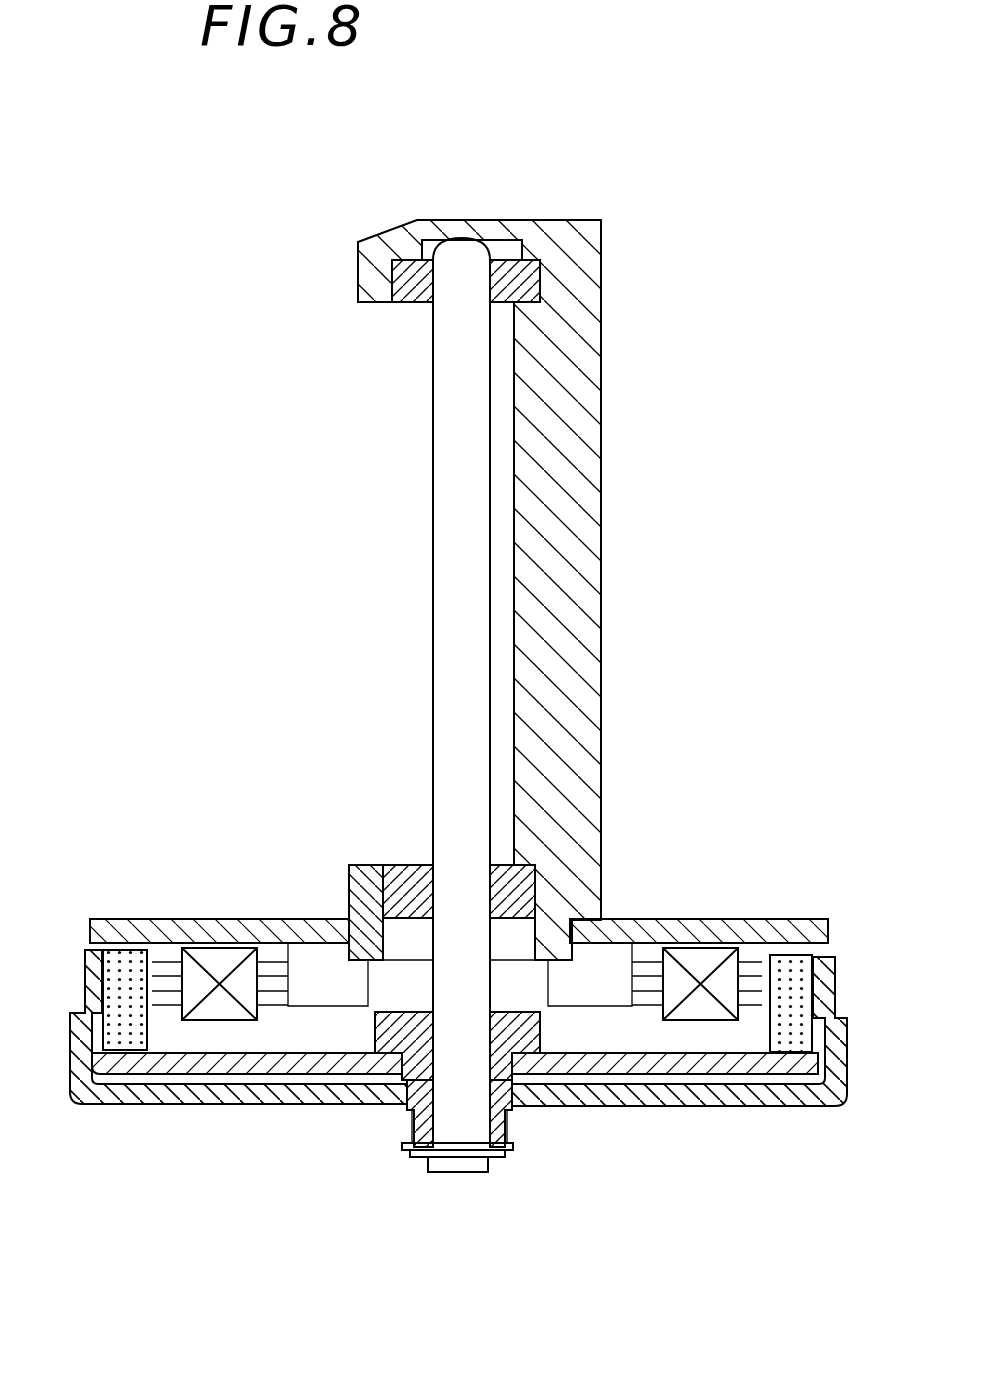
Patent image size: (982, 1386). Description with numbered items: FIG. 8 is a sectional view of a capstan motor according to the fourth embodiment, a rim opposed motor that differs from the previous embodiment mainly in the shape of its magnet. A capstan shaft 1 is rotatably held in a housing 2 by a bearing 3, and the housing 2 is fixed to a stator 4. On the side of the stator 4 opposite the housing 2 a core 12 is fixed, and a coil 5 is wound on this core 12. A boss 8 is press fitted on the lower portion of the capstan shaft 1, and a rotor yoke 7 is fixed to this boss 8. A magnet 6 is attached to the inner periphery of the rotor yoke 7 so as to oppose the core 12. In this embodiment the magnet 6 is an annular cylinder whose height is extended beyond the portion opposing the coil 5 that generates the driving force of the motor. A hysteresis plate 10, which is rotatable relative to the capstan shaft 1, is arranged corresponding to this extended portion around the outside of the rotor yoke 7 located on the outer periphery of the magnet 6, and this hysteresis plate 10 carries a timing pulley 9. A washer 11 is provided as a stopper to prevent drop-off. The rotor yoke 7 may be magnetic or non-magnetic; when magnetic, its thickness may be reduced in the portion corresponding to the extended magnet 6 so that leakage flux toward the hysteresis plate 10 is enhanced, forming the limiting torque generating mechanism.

The capstan shaft 1 is at (447, 477).
The housing 2 is at (592, 425).
The bearing 3 is at (397, 303).
The stator 4 is at (645, 920).
The coil 5 is at (700, 955).
The magnet 6 is at (138, 1047).
The rotor yoke 7 is at (255, 1067).
The boss 8 is at (375, 1027).
The timing pulley 9 is at (512, 1127).
The hysteresis plate 10 is at (637, 1112).
The washer 11 is at (463, 1165).
The core 12 is at (757, 967).